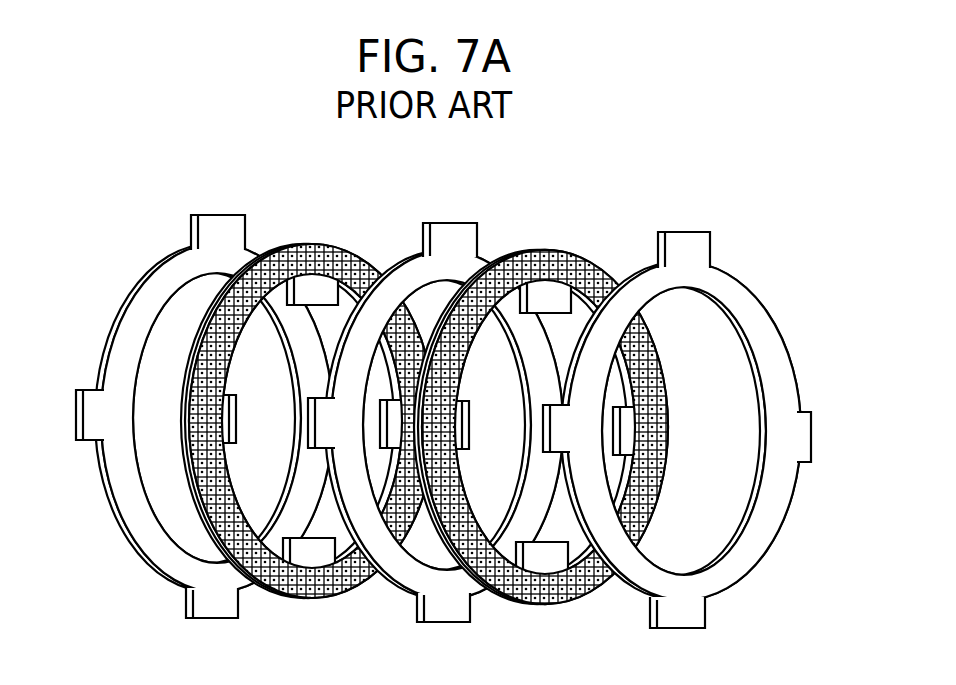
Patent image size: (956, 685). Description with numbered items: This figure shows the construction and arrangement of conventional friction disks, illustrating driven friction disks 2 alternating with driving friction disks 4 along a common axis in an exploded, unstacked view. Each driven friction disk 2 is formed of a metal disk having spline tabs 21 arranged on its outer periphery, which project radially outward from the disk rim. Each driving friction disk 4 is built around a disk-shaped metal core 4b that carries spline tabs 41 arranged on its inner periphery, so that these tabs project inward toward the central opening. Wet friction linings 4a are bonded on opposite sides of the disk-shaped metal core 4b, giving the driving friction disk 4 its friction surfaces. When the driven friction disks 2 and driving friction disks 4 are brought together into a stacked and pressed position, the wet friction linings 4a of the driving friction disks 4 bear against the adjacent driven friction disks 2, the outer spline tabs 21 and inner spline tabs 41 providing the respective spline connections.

The driven friction disk 2 is at (131, 244).
The spline tab 21 is at (231, 232).
The driving friction disk 4 is at (315, 418).
The spline tab 41 is at (323, 287).
The wet friction lining 4a is at (337, 587).
The disk-shaped metal core 4b is at (292, 572).